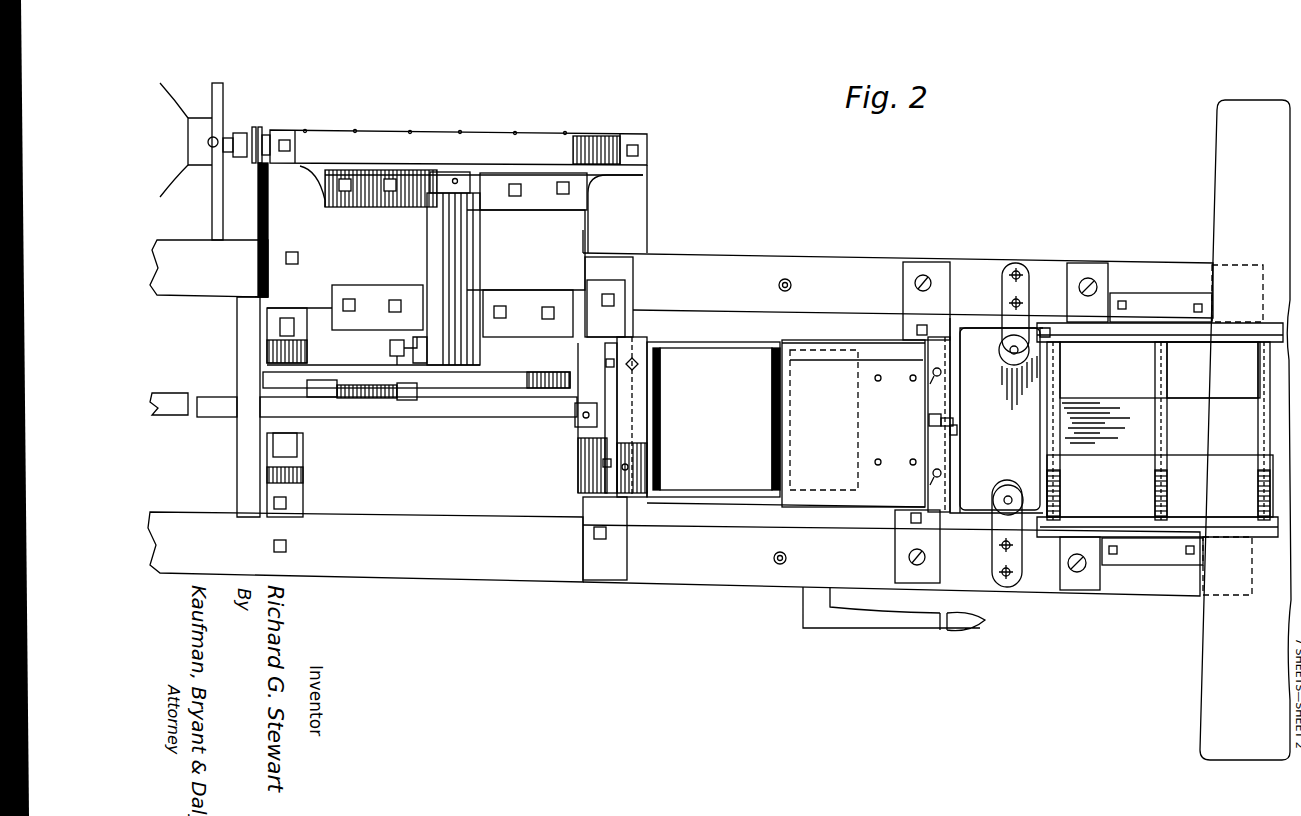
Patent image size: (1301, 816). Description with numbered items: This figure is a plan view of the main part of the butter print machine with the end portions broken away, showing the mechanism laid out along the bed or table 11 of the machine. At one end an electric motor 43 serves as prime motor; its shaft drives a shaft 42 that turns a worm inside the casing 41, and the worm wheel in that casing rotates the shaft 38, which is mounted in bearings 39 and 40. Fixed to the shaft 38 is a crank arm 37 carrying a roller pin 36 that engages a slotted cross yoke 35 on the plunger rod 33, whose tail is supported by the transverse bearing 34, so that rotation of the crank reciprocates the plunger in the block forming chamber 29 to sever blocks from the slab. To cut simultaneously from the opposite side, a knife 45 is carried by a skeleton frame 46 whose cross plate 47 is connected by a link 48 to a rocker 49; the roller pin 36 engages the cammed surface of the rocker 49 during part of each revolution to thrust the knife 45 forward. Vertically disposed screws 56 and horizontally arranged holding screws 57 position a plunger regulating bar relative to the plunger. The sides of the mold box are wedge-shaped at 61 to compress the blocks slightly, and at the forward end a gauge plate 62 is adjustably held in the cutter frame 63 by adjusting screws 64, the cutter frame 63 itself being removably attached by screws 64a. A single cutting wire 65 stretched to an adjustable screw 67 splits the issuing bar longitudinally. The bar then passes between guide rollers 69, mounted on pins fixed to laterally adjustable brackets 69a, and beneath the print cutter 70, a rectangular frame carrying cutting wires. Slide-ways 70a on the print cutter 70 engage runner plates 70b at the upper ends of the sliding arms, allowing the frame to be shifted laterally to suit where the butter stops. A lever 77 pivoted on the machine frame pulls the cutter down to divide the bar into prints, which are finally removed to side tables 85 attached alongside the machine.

The bed or table 11 is at (838, 248).
The block forming chamber 29 is at (660, 378).
The plunger rod 33 is at (207, 407).
The transverse bearing 34 is at (237, 460).
The slotted cross yoke 35 is at (410, 399).
The roller pin 36 is at (370, 400).
The crank arm 37 is at (423, 349).
The shaft 38 is at (445, 258).
The bearing 39 is at (435, 290).
The bearing 40 is at (443, 188).
The casing 41 is at (430, 140).
The shaft 42 is at (235, 131).
The electric motor 43 is at (188, 98).
The knife 45 is at (845, 338).
The skeleton frame 46 is at (605, 493).
The cross plate 47 is at (578, 453).
The link 48 is at (470, 407).
The rocker 49 is at (512, 374).
The vertically disposed screws 56 is at (636, 370).
The horizontally arranged holding screws 57 is at (606, 362).
The wedge-shaped sides of mold box 61 is at (831, 355).
The gauge plate 62 is at (853, 423).
The cutter frame 63 is at (923, 493).
The adjusting screws 64 is at (941, 375).
The screws 64a is at (925, 328).
The cutting wire 65 is at (957, 430).
The adjustable screw 67 is at (948, 418).
The guide rollers 69 is at (1017, 364).
The brackets 69a is at (1004, 290).
The print cutter 70 is at (1128, 340).
The slide-ways 70a is at (1216, 338).
The runner plates 70b is at (1157, 327).
The lever 77 is at (905, 630).
The side tables 85 is at (1220, 160).